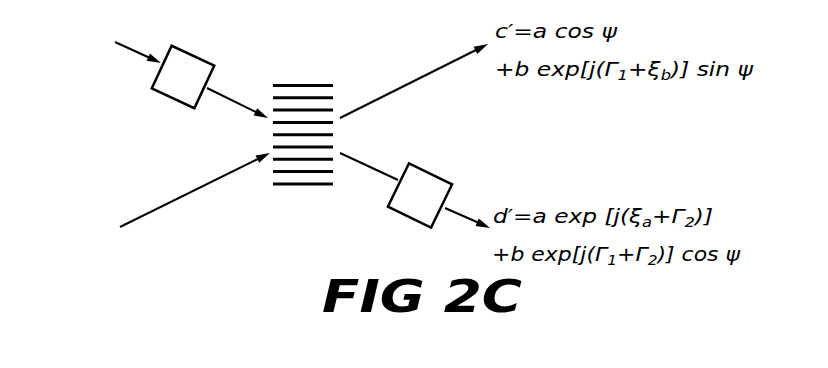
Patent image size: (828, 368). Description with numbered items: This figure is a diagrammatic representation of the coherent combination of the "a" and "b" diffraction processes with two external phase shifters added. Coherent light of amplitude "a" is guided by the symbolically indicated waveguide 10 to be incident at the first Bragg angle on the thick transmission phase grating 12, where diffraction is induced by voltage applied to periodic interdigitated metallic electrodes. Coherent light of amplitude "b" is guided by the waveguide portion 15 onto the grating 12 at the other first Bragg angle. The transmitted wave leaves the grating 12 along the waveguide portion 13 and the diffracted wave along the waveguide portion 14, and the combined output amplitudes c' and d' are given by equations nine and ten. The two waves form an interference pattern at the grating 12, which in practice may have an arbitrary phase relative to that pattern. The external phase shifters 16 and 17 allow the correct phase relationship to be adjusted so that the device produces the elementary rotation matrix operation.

The waveguide 10 is at (133, 47).
The thick transmission phase grating 12 is at (321, 82).
The waveguide portion 13 is at (412, 82).
The waveguide portion 14 is at (365, 163).
The waveguide portion 15 is at (185, 195).
The external phase shifter 16 is at (194, 56).
The external phase shifter 17 is at (436, 176).